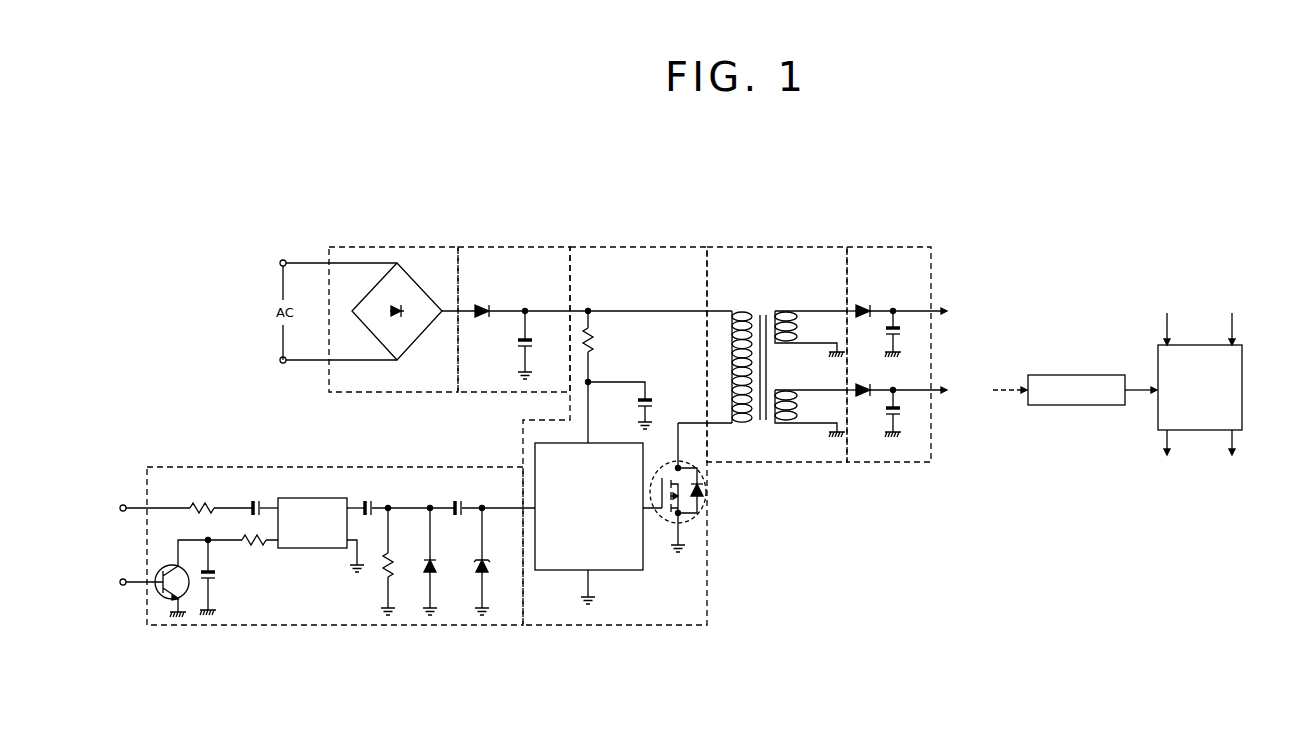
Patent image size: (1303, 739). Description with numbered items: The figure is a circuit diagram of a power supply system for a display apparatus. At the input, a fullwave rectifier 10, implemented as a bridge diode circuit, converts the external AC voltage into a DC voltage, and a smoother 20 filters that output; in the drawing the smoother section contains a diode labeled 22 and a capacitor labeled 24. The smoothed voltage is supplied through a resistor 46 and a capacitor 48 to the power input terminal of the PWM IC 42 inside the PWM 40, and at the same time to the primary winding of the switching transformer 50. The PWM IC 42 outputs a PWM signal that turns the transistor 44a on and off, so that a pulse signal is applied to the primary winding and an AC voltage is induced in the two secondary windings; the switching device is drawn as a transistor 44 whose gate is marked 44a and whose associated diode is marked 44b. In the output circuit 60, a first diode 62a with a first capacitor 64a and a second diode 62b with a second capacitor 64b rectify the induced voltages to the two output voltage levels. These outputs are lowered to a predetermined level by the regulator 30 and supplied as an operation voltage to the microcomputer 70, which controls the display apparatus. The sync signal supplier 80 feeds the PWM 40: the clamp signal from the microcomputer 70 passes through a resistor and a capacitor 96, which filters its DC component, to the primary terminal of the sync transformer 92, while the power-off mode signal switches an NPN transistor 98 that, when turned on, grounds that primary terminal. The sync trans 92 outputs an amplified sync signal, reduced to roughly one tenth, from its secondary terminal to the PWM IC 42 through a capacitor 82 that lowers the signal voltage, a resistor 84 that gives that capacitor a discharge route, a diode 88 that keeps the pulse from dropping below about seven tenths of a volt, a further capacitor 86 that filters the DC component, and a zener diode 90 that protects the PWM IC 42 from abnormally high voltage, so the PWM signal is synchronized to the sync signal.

The fullwave rectifier 10 is at (405, 247).
The smoother 20 is at (516, 247).
The diode D1 22 is at (485, 305).
The capacitor C4 24 is at (520, 345).
The regulator 30 is at (1079, 375).
The PWM 40 is at (647, 247).
The PWM IC 42 is at (594, 442).
The switching transistor 44 is at (711, 504).
The transistor 44a is at (664, 512).
The body diode of switching transistor 44b is at (705, 490).
The resistor (R2) 46 is at (591, 340).
The capacitor (C7) 48 is at (647, 398).
The switching transformer 50 is at (772, 247).
The output circuit 60 is at (883, 247).
The diode (D3) 62a is at (864, 305).
The diode (D4) 62b is at (864, 398).
The capacitor (C5) 64a is at (900, 325).
The capacitor (C6) 64b is at (900, 416).
The microcomputer 70 is at (1242, 388).
The sync signal supplier 80 is at (226, 467).
The capacitor (C1) 82 is at (373, 500).
The resistor (R1) 84 is at (385, 573).
The capacitor (C2) 86 is at (461, 500).
The diode (D2) 88 is at (427, 573).
The zener diode (ZD5) 90 is at (480, 573).
The sync transformer 92 is at (318, 498).
The capacitor (C3) 96 is at (262, 500).
The transistor 98 is at (174, 612).